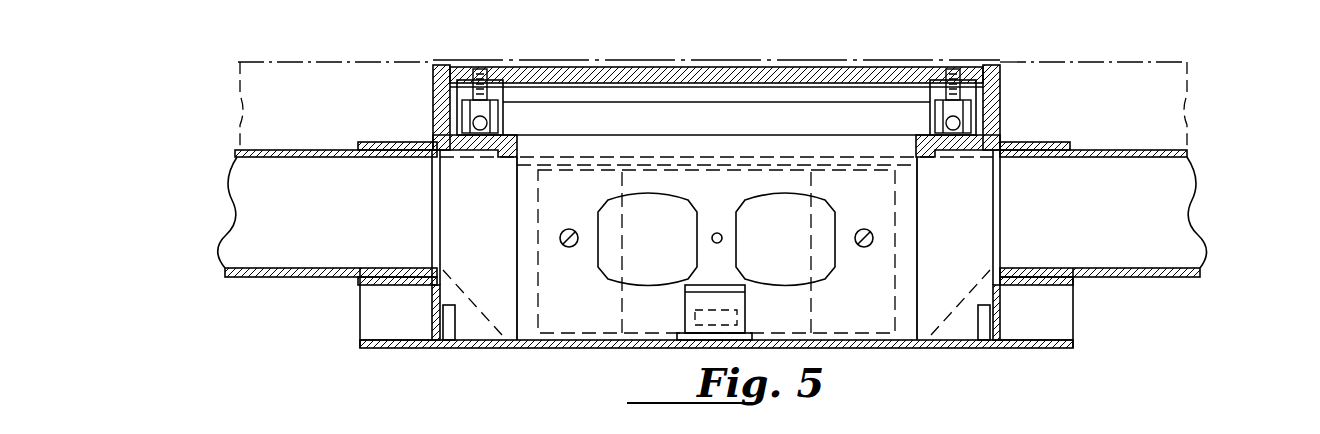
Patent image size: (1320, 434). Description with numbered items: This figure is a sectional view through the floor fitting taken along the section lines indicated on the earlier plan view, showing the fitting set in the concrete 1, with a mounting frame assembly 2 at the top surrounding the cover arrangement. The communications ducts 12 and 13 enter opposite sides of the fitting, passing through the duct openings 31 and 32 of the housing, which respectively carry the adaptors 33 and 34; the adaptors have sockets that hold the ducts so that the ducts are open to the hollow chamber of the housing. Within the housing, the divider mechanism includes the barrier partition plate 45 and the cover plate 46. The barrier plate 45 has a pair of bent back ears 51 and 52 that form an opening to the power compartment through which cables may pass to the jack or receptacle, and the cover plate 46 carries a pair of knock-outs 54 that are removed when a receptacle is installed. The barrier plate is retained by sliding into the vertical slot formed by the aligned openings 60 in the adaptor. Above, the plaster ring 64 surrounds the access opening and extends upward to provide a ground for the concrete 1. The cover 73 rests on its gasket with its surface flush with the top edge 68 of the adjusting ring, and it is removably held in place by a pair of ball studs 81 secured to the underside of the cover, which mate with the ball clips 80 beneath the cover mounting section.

The concrete 1 is at (234, 76).
The mounting frame assembly 2 is at (1012, 146).
The communications duct 12 is at (258, 151).
The communications duct 13 is at (1166, 151).
The duct opening 31 is at (394, 162).
The duct opening 32 is at (982, 164).
The adaptor 33 is at (383, 289).
The adaptor 34 is at (1052, 290).
The barrier partition plate 45 is at (623, 188).
The cover plate 46 is at (590, 319).
The bent back ear 51 is at (643, 287).
The bent back ear 52 is at (809, 290).
The knock-out 54 is at (750, 205).
The aligned openings 60 is at (737, 300).
The plaster ring 64 is at (433, 99).
The top edge 68 is at (447, 65).
The cover 73 is at (828, 74).
The ball clip 80 is at (503, 113).
The ball stud 81 is at (478, 124).